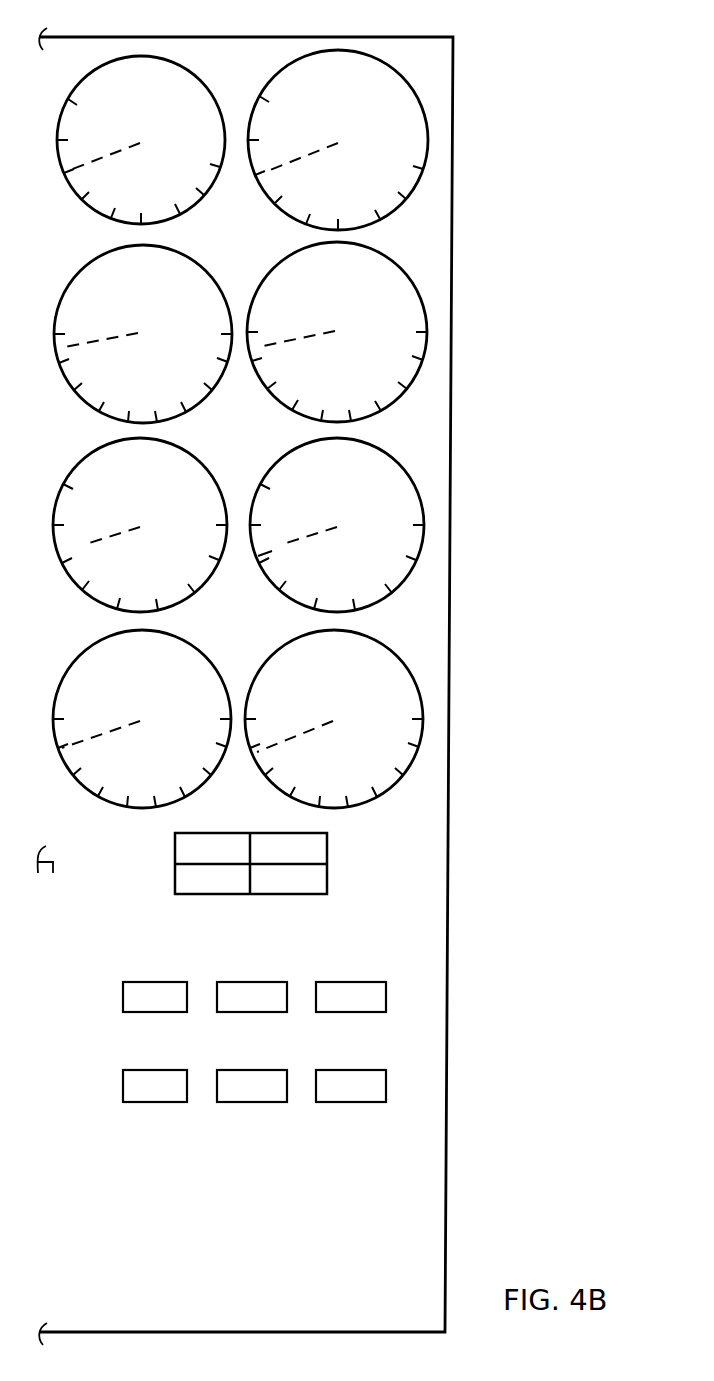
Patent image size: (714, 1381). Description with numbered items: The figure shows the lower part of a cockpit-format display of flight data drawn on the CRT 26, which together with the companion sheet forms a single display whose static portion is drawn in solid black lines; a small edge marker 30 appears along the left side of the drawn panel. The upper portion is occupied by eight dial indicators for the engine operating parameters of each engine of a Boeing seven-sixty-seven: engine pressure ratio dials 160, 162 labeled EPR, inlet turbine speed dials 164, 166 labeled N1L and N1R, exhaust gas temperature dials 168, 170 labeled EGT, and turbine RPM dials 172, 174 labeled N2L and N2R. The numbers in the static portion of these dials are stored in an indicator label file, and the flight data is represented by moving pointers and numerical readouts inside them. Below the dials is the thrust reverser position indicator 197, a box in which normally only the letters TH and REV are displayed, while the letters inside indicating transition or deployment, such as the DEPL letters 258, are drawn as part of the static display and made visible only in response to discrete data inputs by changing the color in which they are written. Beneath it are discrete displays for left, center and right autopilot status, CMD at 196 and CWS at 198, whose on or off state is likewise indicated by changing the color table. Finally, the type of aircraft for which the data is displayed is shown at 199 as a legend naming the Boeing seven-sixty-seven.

The CRT 26 is at (202, 37).
The panel section marker 30 is at (55, 872).
The engine pressure ratio dial indicator 160 is at (196, 67).
The engine pressure ratio dial indicator 162 is at (421, 103).
The inlet turbine speed dial indicator 164 is at (188, 257).
The inlet turbine speed dial indicator 166 is at (377, 250).
The exhaust gas temperature dial indicator 168 is at (190, 455).
The exhaust gas temperature dial indicator 170 is at (370, 443).
The turbine RPM dial indicator 172 is at (188, 640).
The turbine RPM dial indicator 174 is at (367, 634).
The thrust reverser position indicator 197 is at (327, 845).
The DEPL letters 258 is at (183, 877).
The CMD autopilot status discrete display 196 is at (293, 944).
The CWS autopilot status discrete display 198 is at (329, 1059).
The aircraft type display 199 is at (236, 1215).